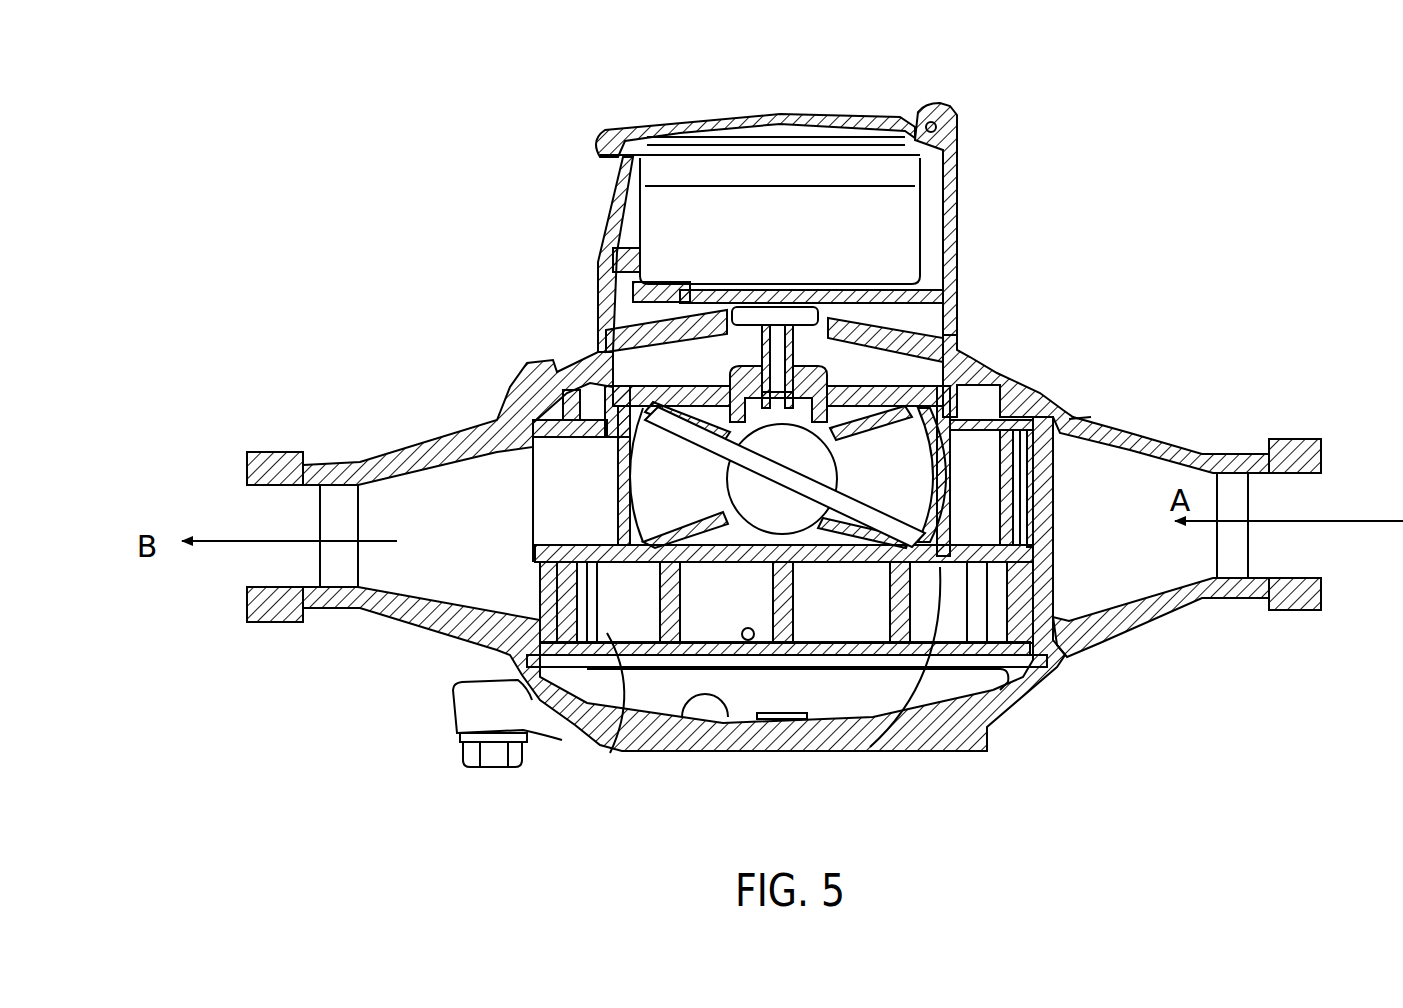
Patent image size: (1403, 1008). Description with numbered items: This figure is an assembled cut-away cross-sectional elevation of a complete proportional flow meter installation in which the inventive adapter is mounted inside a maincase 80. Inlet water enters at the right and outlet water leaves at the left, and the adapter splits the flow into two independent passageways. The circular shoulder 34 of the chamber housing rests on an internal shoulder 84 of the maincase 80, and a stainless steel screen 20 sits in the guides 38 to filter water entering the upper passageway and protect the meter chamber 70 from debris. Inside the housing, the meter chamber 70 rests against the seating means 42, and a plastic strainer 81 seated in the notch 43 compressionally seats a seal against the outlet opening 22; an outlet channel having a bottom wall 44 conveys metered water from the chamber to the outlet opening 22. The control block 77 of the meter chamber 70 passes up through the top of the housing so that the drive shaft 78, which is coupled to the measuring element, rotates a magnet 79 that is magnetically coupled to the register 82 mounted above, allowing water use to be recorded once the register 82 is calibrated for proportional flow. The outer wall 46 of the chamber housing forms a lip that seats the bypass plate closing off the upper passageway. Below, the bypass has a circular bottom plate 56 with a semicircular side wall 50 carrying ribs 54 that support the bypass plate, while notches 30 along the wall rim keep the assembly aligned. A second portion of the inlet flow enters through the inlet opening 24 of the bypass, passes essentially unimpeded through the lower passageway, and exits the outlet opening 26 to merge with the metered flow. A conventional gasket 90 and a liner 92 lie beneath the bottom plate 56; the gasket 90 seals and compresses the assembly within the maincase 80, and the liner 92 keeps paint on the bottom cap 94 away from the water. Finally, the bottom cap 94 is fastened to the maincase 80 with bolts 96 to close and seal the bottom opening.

The screen 20 is at (1102, 424).
The outlet opening 22 is at (550, 466).
The inlet opening 24 is at (1002, 602).
The outlet opening 26 is at (555, 591).
The notches 30 is at (615, 582).
The shoulder 34 is at (612, 378).
The guides 38 is at (1072, 418).
The seating means 42 is at (597, 417).
The notch 43 is at (953, 540).
The bottom wall 44 is at (570, 545).
The outer wall 46 is at (545, 558).
The side wall 50 is at (613, 749).
The ribs 54 is at (678, 597).
The bottom plate 56 is at (752, 641).
The meter chamber 70 is at (870, 747).
The control block 77 is at (828, 377).
The drive shaft 78 is at (738, 366).
The magnet 79 is at (793, 312).
The maincase 80 is at (362, 438).
The plastic strainer 81 is at (978, 415).
The register 82 is at (795, 198).
The internal shoulder 84 is at (547, 407).
The gasket 90 is at (1000, 680).
The liner 92 is at (720, 747).
The bottom cap 94 is at (930, 749).
The bolts 96 is at (490, 767).